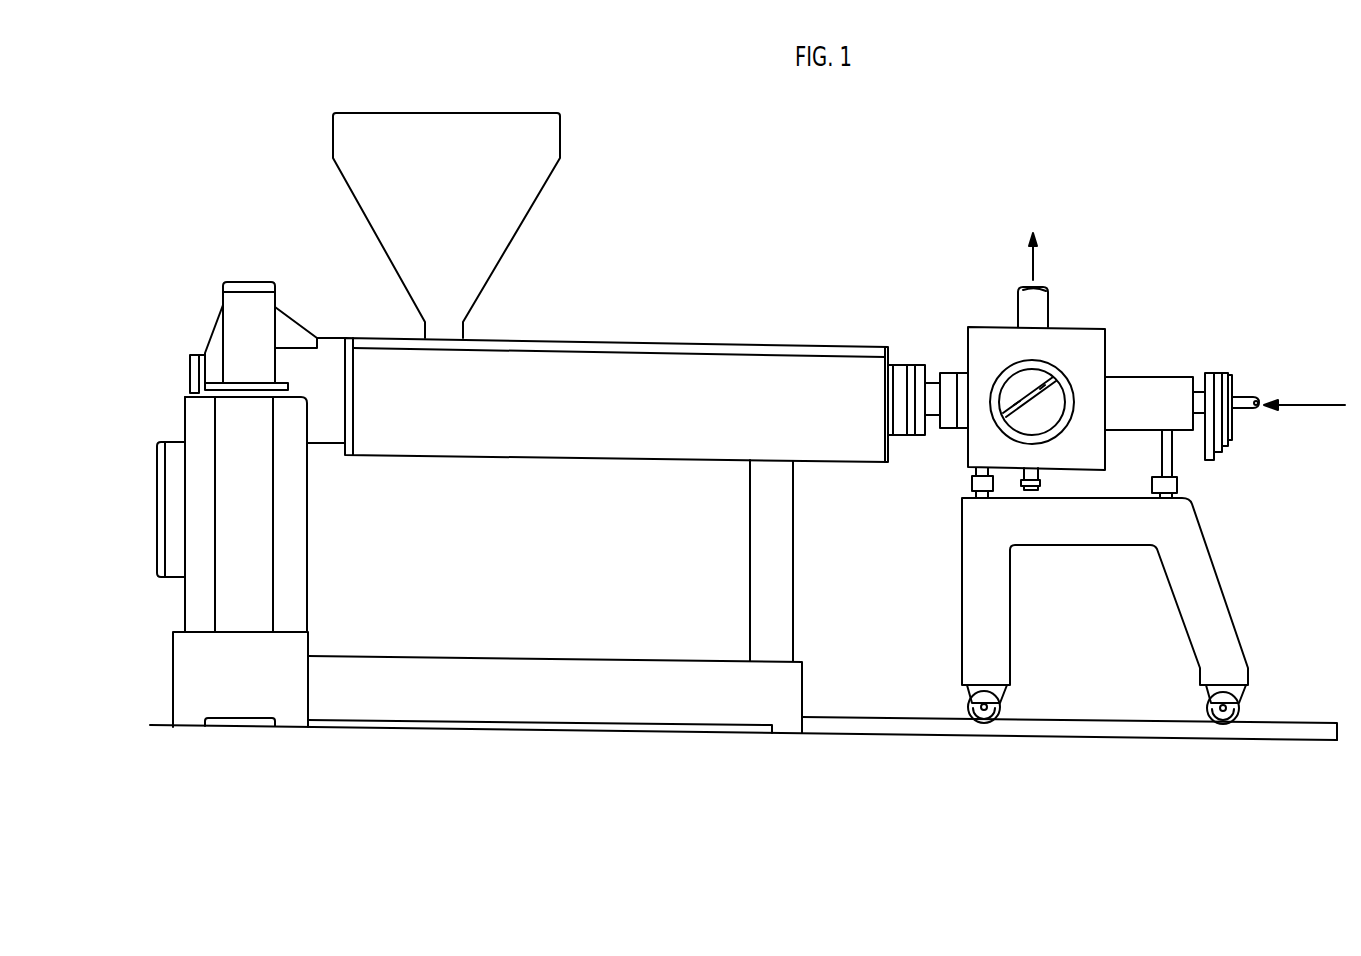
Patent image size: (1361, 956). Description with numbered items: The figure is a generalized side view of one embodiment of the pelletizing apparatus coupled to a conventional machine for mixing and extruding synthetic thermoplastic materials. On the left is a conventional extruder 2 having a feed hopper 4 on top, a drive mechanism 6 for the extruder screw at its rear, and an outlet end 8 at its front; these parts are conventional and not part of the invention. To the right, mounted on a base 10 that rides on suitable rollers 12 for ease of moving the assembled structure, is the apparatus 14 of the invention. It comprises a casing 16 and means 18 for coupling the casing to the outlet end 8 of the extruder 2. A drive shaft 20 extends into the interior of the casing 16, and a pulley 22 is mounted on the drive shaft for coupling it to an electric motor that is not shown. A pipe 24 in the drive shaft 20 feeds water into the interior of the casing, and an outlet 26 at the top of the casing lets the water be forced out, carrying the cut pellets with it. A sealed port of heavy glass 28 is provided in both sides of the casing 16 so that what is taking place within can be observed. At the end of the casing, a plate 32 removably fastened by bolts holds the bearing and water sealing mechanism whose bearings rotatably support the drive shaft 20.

The extruder 2 is at (568, 339).
The feed hopper 4 is at (527, 188).
The drive mechanism 6 is at (188, 385).
The outlet end 8 is at (903, 364).
The base 10 is at (1190, 533).
The rollers 12 is at (1243, 715).
The apparatus 14 is at (1092, 318).
The casing 16 is at (1107, 339).
The coupling means 18 is at (960, 372).
The drive shaft 20 is at (1201, 394).
The pulley 22 is at (1218, 378).
The pipe 24 is at (1248, 396).
The outlet 26 is at (1052, 300).
The sealed port of heavy glass 28 is at (1015, 385).
The plate 32 is at (1130, 377).